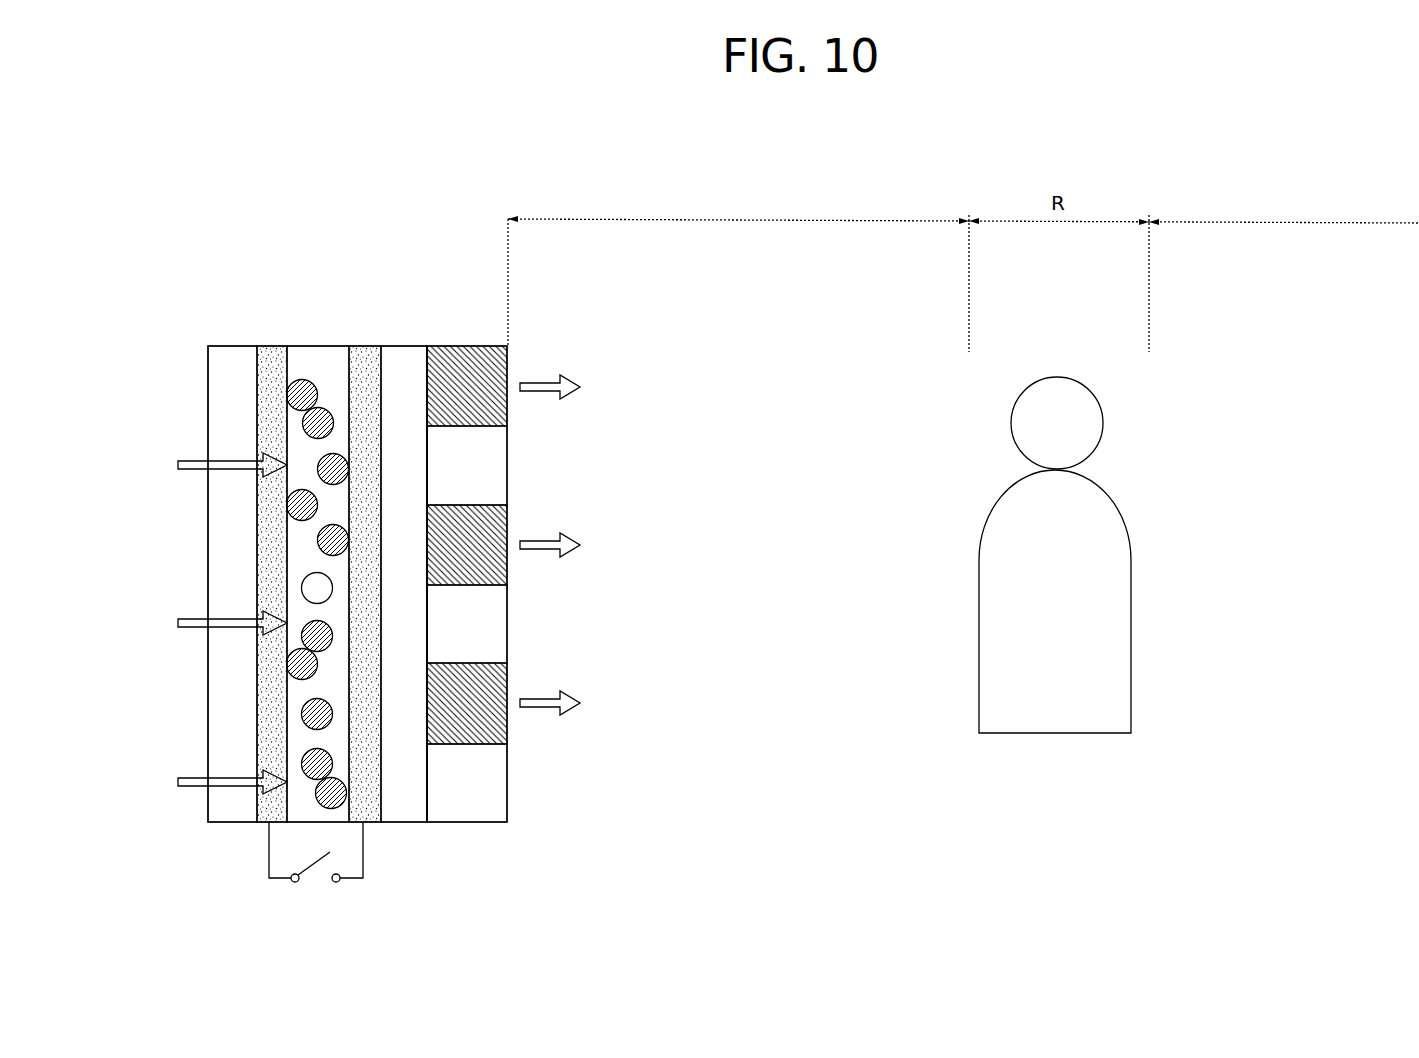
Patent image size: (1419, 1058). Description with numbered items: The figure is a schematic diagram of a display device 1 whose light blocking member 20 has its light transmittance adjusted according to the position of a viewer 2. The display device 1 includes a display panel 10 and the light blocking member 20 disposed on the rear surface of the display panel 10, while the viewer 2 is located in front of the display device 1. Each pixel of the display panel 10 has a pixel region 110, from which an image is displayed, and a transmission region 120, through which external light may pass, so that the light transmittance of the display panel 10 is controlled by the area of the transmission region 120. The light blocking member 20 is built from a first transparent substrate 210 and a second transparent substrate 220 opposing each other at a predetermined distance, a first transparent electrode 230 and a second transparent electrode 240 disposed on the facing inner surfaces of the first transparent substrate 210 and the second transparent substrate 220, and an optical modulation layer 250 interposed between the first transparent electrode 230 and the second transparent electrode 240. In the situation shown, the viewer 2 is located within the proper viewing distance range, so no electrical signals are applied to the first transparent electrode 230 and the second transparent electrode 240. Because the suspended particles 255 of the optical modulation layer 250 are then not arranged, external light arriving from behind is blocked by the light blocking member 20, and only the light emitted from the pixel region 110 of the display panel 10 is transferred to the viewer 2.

The display device 1 is at (368, 232).
The viewer 2 is at (1120, 628).
The display panel 10 is at (516, 821).
The light blocking member 20 is at (202, 338).
The pixel region 110 is at (465, 355).
The transmission region 120 is at (464, 813).
The first transparent substrate 210 is at (222, 569).
The second transparent substrate 220 is at (403, 813).
The first transparent electrode 230 is at (270, 355).
The second transparent electrode 240 is at (366, 355).
The optical modulation layer 250 is at (317, 355).
The suspended particles 255 is at (287, 500).